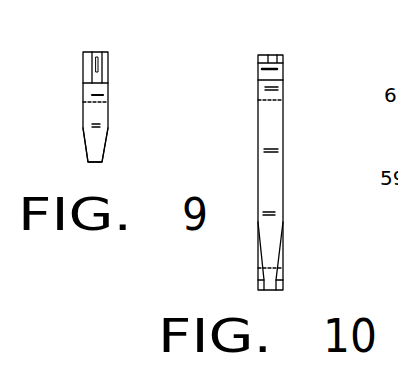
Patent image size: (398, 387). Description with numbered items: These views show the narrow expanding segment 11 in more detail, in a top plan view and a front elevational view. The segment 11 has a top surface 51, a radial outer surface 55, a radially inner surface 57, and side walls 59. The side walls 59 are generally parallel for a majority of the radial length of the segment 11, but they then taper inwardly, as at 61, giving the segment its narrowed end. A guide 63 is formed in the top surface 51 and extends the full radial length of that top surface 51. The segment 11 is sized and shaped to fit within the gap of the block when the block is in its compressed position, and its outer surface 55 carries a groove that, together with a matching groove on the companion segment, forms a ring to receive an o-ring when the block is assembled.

In FIG. 9, the narrow expanding segment 11 is at (102, 48).
In FIG. 10, the narrow expanding segment 11 is at (283, 52).
In FIG. 9, the top surface 51 is at (84, 69).
In FIG. 9, the radial outer surface 55 is at (90, 51).
In FIG. 9, the radially inner surface 57 is at (100, 120).
In FIG. 10, the radially inner surface 57 is at (268, 176).
In FIG. 9, the side walls 59 is at (83, 109).
In FIG. 9, the inward taper 61 is at (83, 144).
In FIG. 10, the inward taper 61 is at (258, 268).
In FIG. 9, the guide 63 is at (103, 66).